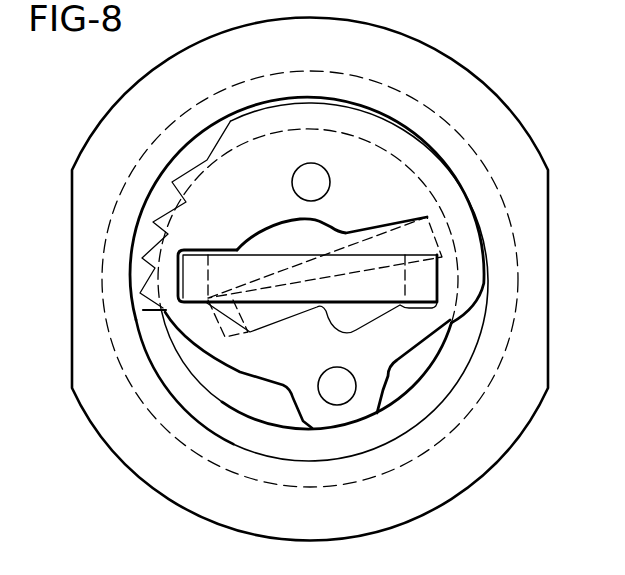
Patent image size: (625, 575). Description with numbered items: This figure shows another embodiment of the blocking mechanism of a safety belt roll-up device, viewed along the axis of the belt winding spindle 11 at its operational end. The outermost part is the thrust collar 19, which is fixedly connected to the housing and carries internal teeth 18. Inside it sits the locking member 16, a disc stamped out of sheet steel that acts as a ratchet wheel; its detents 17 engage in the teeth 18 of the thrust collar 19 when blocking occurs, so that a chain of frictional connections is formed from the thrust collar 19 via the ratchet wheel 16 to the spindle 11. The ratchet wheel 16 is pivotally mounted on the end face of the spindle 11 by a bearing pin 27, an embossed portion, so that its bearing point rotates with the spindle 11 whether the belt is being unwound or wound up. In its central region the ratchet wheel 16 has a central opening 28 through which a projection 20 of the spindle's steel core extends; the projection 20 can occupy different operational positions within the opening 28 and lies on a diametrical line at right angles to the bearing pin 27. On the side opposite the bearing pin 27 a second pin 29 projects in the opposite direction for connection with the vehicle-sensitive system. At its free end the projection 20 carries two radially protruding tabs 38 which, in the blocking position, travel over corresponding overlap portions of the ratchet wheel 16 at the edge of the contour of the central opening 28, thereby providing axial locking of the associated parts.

The belt winding spindle 11 is at (198, 383).
The locking member 16 is at (247, 153).
The detents 17 is at (160, 273).
The teeth 18 is at (505, 205).
The thrust collar 19 is at (503, 126).
The projection 20 is at (393, 290).
The bearing pin 27 is at (322, 176).
The central opening 28 is at (332, 224).
The second pin 29 is at (337, 368).
The radially protruding tabs 38 is at (193, 262).